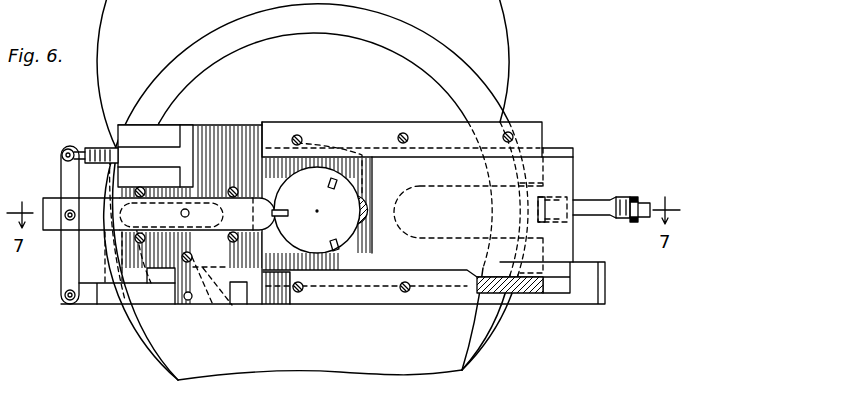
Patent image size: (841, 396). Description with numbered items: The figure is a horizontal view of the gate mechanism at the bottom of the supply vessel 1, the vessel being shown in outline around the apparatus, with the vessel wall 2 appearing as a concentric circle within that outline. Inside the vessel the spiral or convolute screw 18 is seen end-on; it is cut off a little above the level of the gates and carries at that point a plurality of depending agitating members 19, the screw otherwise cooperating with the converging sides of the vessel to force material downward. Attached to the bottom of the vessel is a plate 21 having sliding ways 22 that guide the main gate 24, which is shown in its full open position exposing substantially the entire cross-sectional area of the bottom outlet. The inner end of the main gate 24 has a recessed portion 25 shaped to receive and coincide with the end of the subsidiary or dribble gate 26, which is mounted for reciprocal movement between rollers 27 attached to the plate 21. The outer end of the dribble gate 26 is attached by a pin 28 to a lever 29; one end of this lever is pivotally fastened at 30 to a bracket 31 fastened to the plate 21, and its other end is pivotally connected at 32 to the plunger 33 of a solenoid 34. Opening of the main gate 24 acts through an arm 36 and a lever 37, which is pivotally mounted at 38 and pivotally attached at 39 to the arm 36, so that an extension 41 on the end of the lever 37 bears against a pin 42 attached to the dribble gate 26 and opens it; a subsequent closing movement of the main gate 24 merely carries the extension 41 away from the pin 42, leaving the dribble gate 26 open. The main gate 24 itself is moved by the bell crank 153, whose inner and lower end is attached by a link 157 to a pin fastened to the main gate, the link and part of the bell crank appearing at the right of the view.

The supply vessel 1 is at (449, 60).
The wheel 2 is at (448, 110).
The spiral or convolute screw 18 is at (316, 202).
The agitating members 19 is at (284, 216).
The plate 21 is at (230, 133).
The sliding ways 22 is at (545, 126).
The main gate 24 is at (560, 167).
The recessed portion 25 is at (376, 201).
The dribble gate 26 is at (50, 199).
The rollers 27 is at (140, 243).
The pin 28 is at (68, 221).
The lever 29 is at (68, 267).
The pivot 30 is at (65, 295).
The bracket 31 is at (107, 300).
The pivotal connection 32 is at (66, 152).
The plunger 33 is at (110, 152).
The solenoid 34 is at (167, 133).
The arm 36 is at (254, 262).
The lever 37 is at (236, 300).
The pivot 38 is at (204, 302).
The pivotal attachment 39 is at (188, 300).
The extension 41 is at (207, 203).
The pin 42 is at (181, 212).
The bell crank 153 is at (647, 203).
The link 157 is at (601, 214).